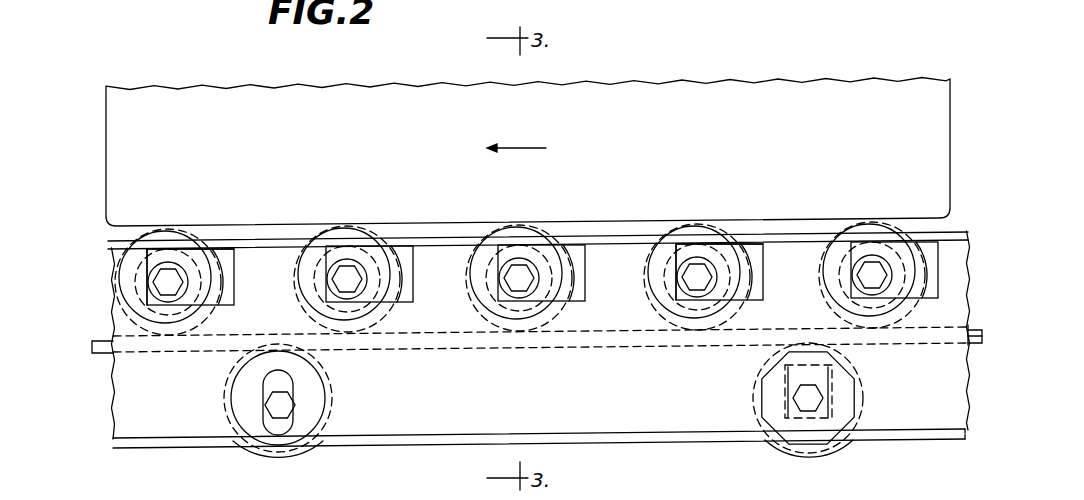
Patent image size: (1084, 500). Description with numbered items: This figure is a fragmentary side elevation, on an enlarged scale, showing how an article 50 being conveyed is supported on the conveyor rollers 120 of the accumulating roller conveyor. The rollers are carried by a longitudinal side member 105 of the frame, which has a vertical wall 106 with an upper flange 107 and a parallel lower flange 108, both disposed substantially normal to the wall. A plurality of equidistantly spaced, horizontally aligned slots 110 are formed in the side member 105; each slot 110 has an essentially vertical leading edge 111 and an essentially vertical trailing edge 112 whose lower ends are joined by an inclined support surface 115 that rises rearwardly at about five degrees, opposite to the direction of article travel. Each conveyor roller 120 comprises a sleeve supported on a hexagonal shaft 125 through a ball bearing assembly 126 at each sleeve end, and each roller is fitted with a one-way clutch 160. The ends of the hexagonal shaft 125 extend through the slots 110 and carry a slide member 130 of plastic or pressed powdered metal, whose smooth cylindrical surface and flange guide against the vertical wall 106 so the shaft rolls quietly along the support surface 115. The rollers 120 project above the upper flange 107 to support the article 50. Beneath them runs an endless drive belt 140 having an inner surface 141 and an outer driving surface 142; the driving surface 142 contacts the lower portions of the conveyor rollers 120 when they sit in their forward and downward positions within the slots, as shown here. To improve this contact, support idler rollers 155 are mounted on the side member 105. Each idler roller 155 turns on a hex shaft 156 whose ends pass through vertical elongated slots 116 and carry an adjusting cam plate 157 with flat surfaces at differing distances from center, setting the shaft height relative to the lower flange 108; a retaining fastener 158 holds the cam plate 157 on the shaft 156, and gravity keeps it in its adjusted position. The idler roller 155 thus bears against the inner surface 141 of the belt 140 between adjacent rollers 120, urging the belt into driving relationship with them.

The article 50 is at (163, 100).
The one-way clutch 160 is at (532, 133).
The longitudinal side member 105 is at (455, 408).
The vertical wall 106 is at (548, 397).
The upper flange 107 is at (452, 242).
The lower flange 108 is at (612, 440).
The slot 110 is at (229, 255).
The leading edge 111 is at (164, 258).
The trailing edge 112 is at (232, 270).
The inclined support surface 115 is at (203, 295).
The elongated slot 116 is at (293, 385).
The conveyor roller 120 is at (192, 223).
The hexagonal shaft 125 is at (158, 280).
The ball bearing assembly 126 is at (200, 262).
The slide member 130 is at (150, 302).
The drive belt 140 is at (98, 353).
The inner surface 141 is at (965, 352).
The outer driving surface 142 is at (967, 330).
The support idler roller 155 is at (272, 458).
The hex shaft 156 is at (283, 408).
The adjusting cam plate 157 is at (234, 382).
The retaining fastener 158 is at (860, 382).